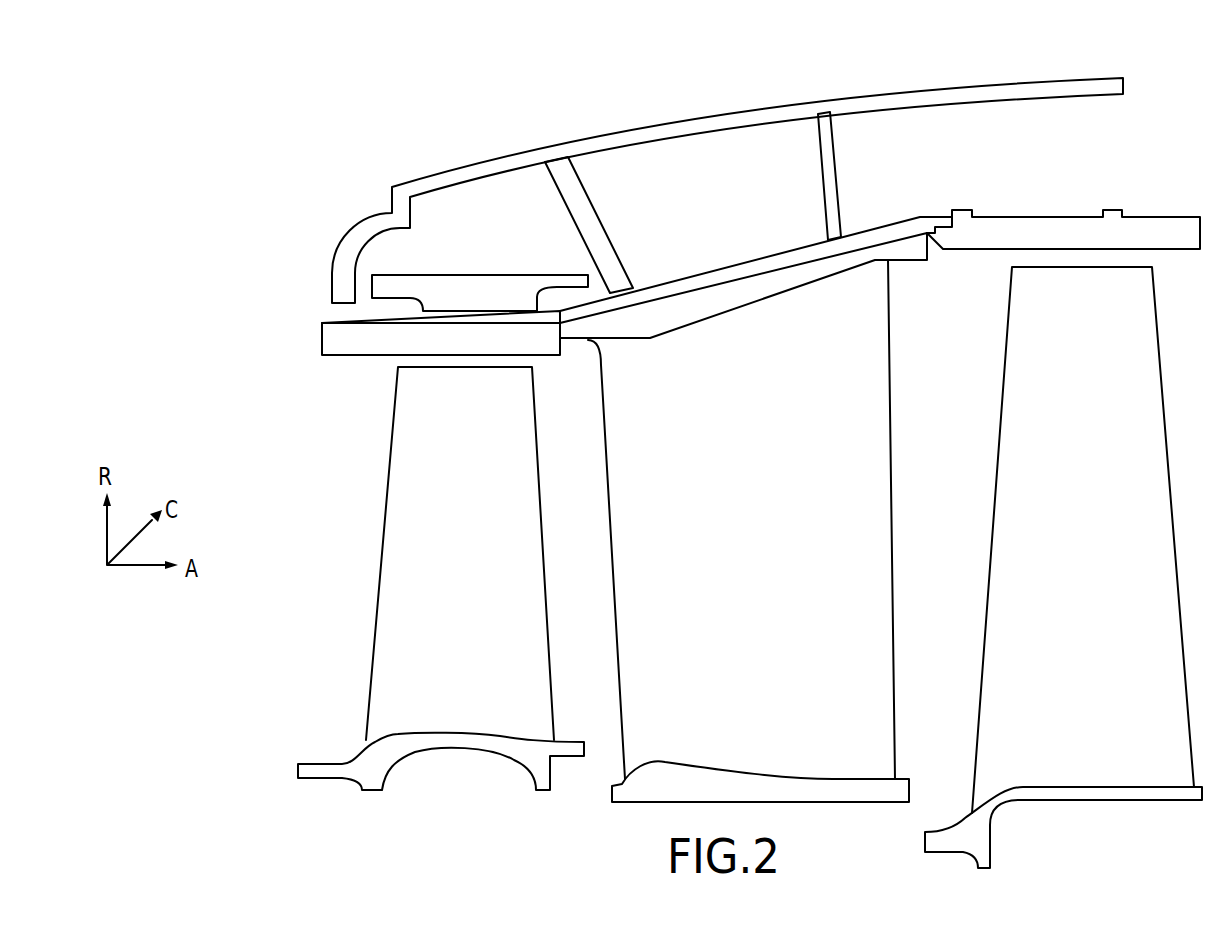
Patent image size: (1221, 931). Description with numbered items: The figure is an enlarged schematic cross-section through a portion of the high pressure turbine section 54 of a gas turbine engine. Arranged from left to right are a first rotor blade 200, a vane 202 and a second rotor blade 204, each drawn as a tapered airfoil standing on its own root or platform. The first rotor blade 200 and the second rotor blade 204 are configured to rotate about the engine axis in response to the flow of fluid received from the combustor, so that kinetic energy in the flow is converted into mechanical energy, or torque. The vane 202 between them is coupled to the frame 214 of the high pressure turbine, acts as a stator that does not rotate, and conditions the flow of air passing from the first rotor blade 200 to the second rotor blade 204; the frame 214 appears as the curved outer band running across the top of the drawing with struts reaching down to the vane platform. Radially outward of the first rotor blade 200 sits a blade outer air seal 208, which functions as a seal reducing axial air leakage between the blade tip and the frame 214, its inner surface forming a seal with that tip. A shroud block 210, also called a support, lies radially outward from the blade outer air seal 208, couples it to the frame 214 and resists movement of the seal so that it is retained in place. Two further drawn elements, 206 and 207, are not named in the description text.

The high pressure turbine section 54 is at (313, 133).
The first rotor blade 200 is at (412, 380).
The vane 202 is at (825, 290).
The second rotor blade 204 is at (1127, 305).
The vane outer platform 206 is at (748, 278).
The blade outer air seal 207 is at (431, 262).
The blade outer air seal 208 is at (353, 340).
The shroud block 210 is at (375, 320).
The frame 214 is at (975, 90).